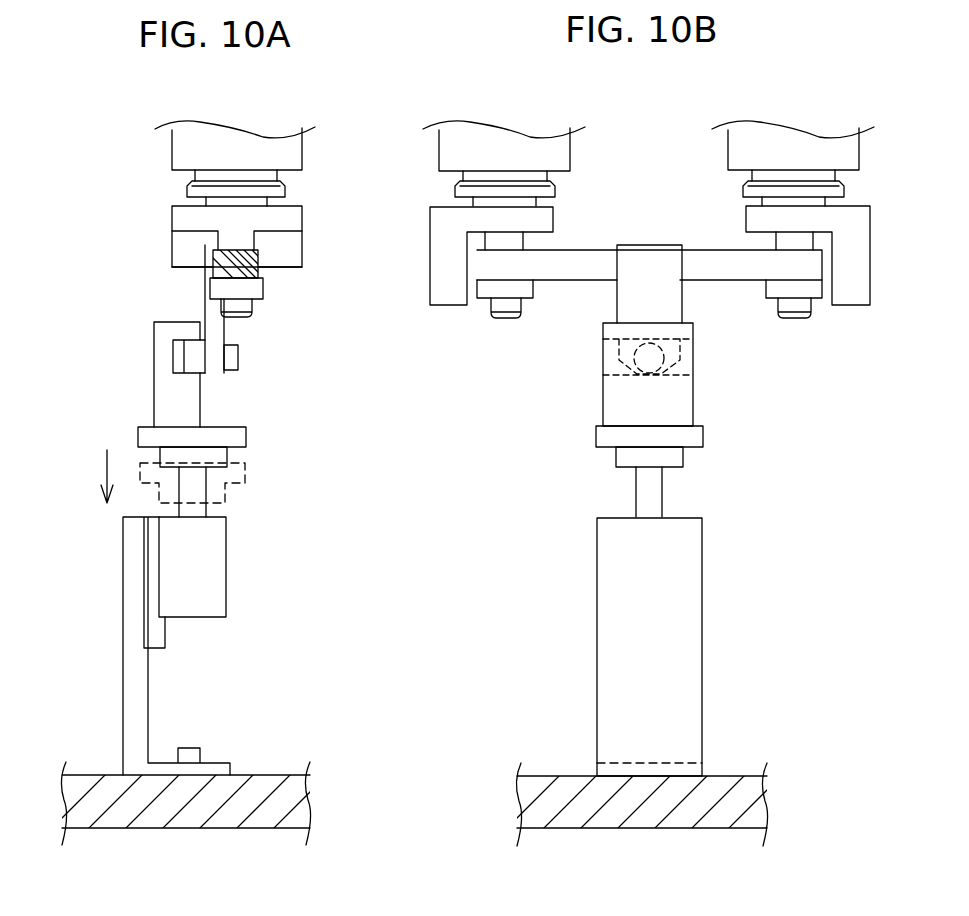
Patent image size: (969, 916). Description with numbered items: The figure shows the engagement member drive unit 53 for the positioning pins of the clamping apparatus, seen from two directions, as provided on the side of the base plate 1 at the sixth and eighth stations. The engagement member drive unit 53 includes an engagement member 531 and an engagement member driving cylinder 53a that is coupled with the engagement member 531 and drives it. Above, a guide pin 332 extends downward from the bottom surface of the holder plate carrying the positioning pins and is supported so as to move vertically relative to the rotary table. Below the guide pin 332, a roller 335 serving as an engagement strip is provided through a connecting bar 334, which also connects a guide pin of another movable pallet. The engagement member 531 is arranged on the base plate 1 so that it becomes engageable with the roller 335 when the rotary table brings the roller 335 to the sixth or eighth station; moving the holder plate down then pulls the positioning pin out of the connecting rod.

In FIG. 10A, the base plate 1 is at (227, 820).
In FIG. 10A, the engagement member drive unit 53 is at (262, 449).
In FIG. 10A, the engagement member driving cylinder 53a is at (218, 575).
In FIG. 10A, the engagement member 531 is at (158, 375).
In FIG. 10A, the guide pin 332 is at (245, 307).
In FIG. 10B, the connecting bar 334 is at (710, 272).
In FIG. 10A, the roller 335 is at (193, 365).
In FIG. 10B, the roller 335 is at (657, 361).